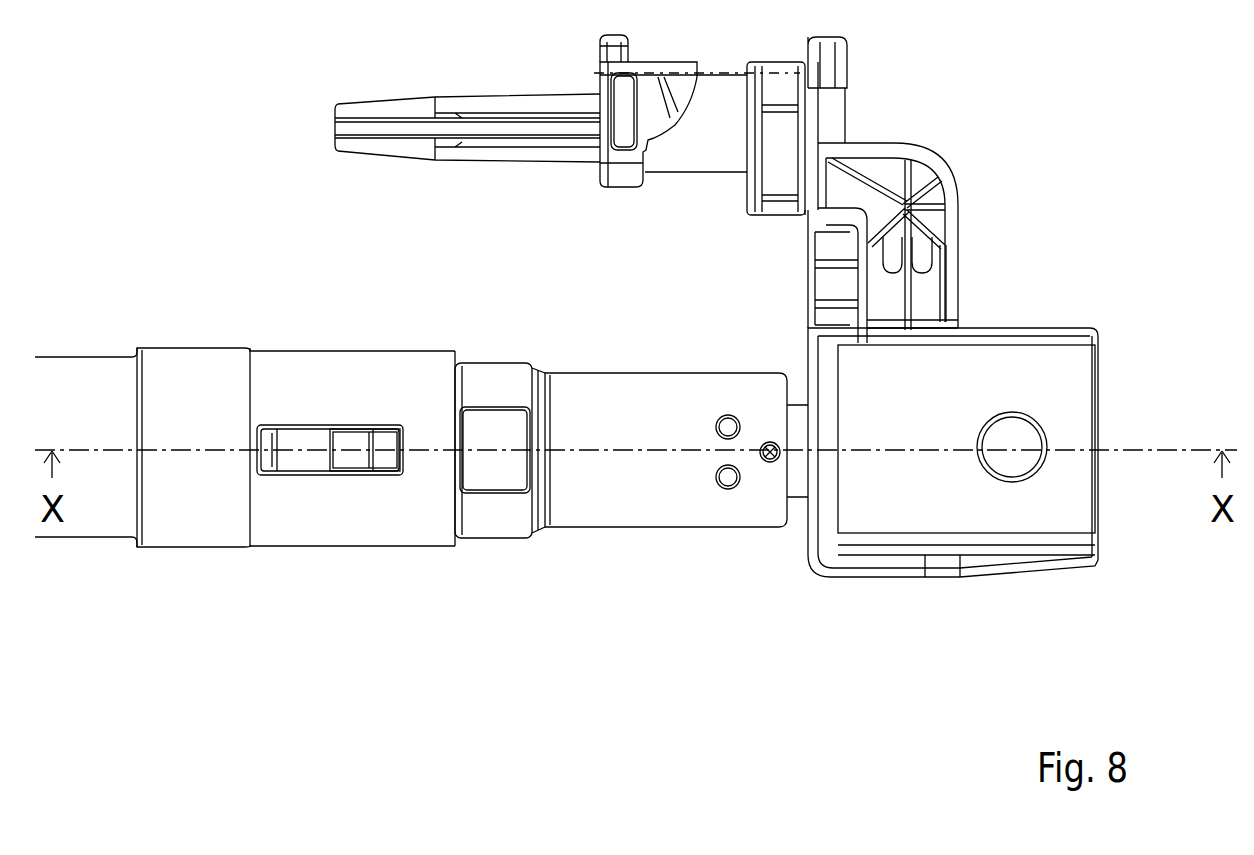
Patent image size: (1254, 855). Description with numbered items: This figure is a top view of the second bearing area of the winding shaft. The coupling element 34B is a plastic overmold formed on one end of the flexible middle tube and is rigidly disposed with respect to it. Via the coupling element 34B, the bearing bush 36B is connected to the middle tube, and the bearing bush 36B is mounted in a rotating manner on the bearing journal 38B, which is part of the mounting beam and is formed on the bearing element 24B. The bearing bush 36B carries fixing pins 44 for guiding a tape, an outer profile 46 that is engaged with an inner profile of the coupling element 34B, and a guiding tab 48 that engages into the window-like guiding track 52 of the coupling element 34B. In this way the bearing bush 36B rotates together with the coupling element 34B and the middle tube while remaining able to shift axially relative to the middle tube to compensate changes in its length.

The bearing element 24B is at (1098, 566).
The coupling element 34B is at (326, 516).
The bearing bush 36B is at (635, 506).
The bearing journal 38B is at (798, 478).
The fixing pins 44 is at (721, 470).
The outer profile 46 is at (490, 476).
The guiding tab 48 is at (356, 438).
The guiding track 52 is at (310, 428).